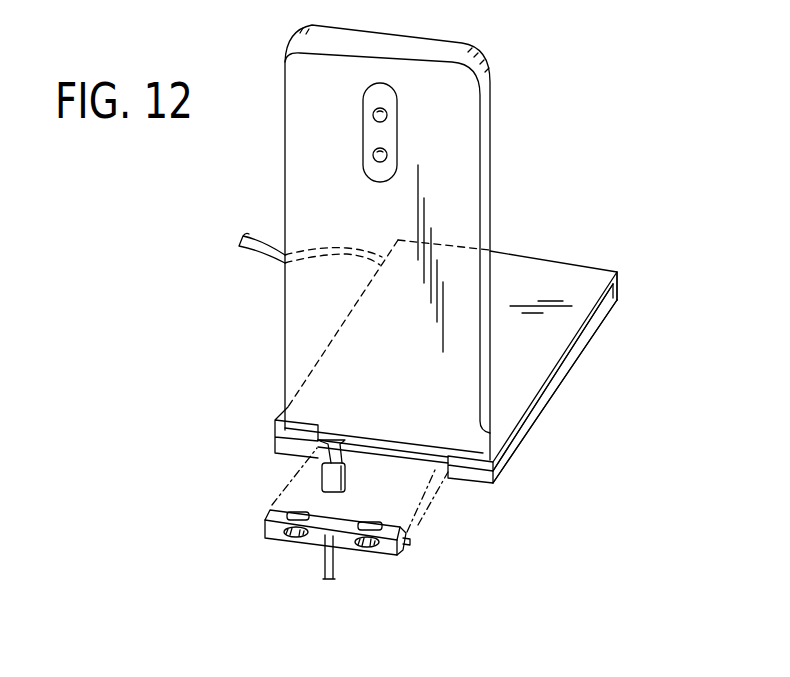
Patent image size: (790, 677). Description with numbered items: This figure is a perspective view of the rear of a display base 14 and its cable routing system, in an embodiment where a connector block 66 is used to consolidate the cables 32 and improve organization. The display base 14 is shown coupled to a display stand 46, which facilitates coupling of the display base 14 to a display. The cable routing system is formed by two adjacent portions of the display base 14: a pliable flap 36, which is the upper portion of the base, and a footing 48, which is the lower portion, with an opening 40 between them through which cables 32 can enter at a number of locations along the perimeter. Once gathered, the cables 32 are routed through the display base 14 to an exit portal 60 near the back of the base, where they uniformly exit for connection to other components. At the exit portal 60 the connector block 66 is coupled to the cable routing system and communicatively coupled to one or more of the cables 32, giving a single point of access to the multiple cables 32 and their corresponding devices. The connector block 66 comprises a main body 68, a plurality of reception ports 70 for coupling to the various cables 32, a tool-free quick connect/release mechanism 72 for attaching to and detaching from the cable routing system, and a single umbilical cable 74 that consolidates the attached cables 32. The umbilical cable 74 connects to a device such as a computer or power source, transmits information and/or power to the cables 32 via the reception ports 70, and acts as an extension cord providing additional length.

The display base 14 is at (594, 243).
The cable 32 is at (262, 247).
The pliable flap 36 is at (618, 280).
The opening 40 is at (600, 315).
The display stand 46 is at (578, 86).
The footing 48 is at (572, 362).
The exit portal 60 is at (428, 470).
The connector block 66 is at (352, 568).
The main body 68 is at (270, 530).
The reception ports 70 is at (300, 512).
The tool-free quick connect/release mechanism 72 is at (412, 592).
The umbilical cable 74 is at (320, 562).